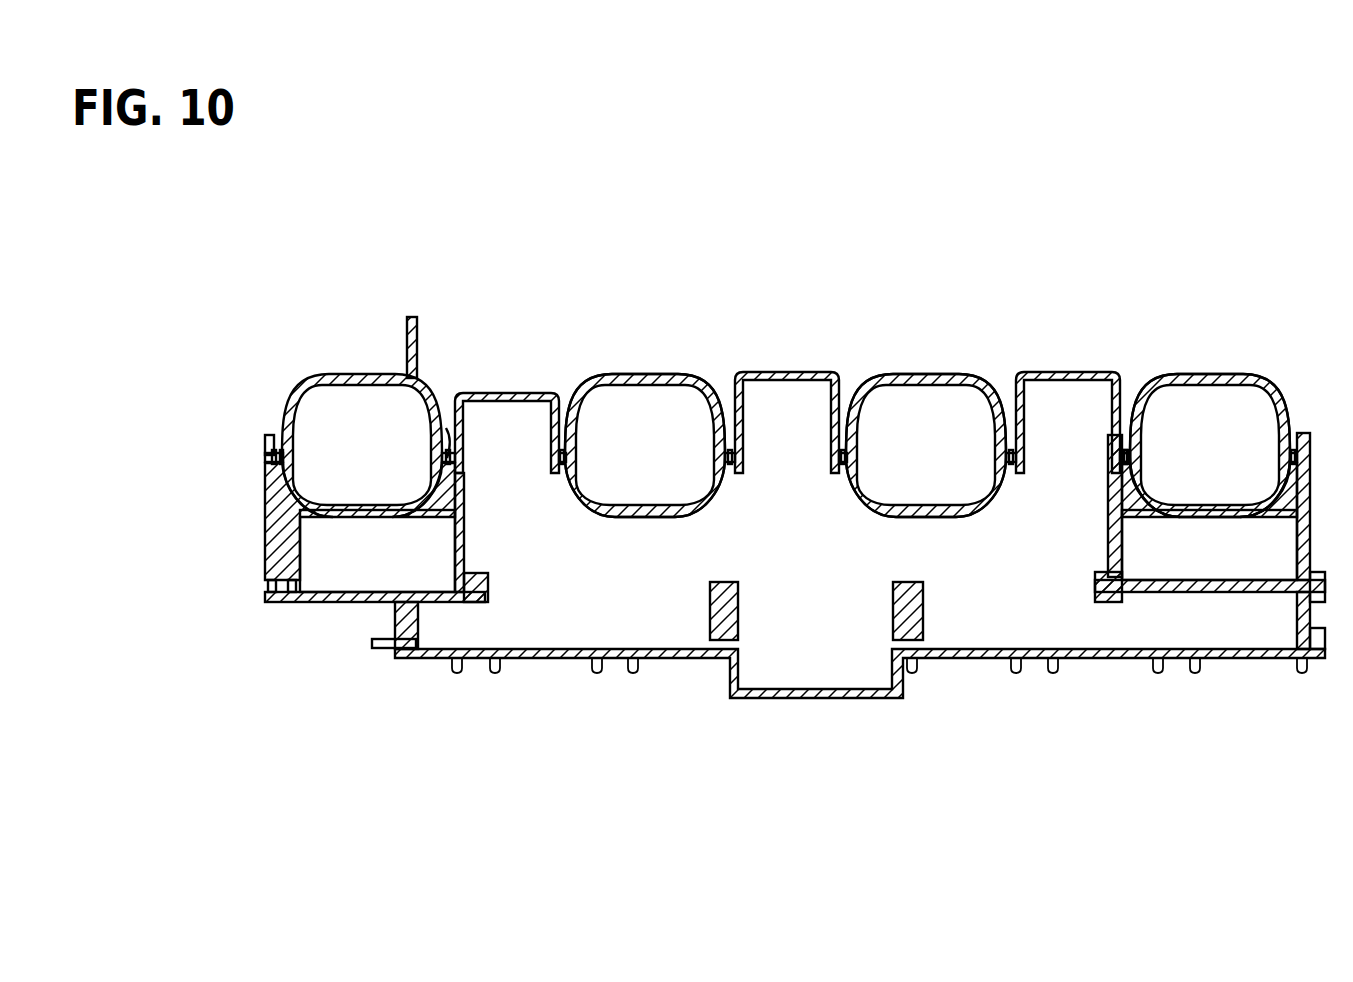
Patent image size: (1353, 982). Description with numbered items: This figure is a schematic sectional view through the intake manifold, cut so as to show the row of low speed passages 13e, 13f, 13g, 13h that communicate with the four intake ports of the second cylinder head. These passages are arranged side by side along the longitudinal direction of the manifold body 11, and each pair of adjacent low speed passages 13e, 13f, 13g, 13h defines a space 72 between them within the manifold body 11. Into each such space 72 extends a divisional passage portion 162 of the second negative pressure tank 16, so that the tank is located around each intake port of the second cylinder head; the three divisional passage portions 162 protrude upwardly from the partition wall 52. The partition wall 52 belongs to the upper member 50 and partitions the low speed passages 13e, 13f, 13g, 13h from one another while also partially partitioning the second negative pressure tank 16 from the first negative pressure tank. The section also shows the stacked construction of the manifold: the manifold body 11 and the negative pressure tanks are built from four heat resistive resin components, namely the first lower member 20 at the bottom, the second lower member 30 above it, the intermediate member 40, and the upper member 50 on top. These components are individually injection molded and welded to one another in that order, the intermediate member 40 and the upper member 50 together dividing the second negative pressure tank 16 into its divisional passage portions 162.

The manifold body 11 is at (202, 425).
The low speed passage 13e is at (1230, 455).
The low speed passage 13f is at (946, 455).
The low speed passage 13g is at (665, 455).
The low speed passage 13h is at (385, 455).
The second negative pressure tank 16 is at (607, 612).
The divisional passage portion 162 is at (507, 411).
The first lower member 20 is at (372, 644).
The second lower member 30 is at (263, 597).
The intermediate member 40 is at (266, 536).
The upper member 50 is at (266, 442).
The partition wall 52 is at (449, 440).
The space 72 is at (570, 386).